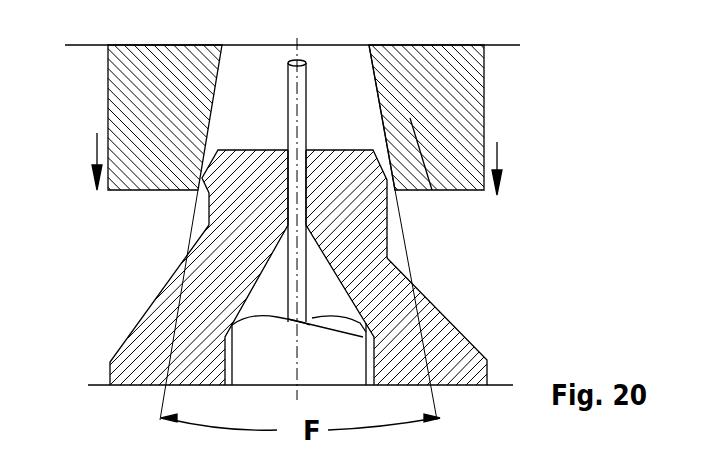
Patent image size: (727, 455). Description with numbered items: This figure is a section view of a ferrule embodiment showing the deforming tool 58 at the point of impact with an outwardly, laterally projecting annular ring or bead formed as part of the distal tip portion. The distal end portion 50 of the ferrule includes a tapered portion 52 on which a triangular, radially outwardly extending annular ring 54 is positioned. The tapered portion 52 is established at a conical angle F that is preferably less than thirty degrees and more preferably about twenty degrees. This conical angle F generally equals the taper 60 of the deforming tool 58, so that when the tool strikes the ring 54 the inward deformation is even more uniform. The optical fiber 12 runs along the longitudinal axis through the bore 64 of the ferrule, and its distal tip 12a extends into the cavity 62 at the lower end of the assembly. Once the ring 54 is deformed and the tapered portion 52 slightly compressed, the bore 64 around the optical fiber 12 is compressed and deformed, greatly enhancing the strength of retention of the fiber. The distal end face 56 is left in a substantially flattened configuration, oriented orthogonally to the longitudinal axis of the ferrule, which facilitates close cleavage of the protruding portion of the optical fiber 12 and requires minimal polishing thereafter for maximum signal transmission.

The optical fiber 12 is at (308, 90).
The pin tip 12a is at (228, 358).
The distal end portion 50 is at (210, 227).
The tapered portion 52 is at (377, 162).
The annular ring 54 is at (202, 178).
The distal end face 56 is at (253, 150).
The deforming tool 58 is at (486, 120).
The taper 60 is at (373, 88).
The cavity 62 is at (370, 358).
The bore 64 is at (307, 183).